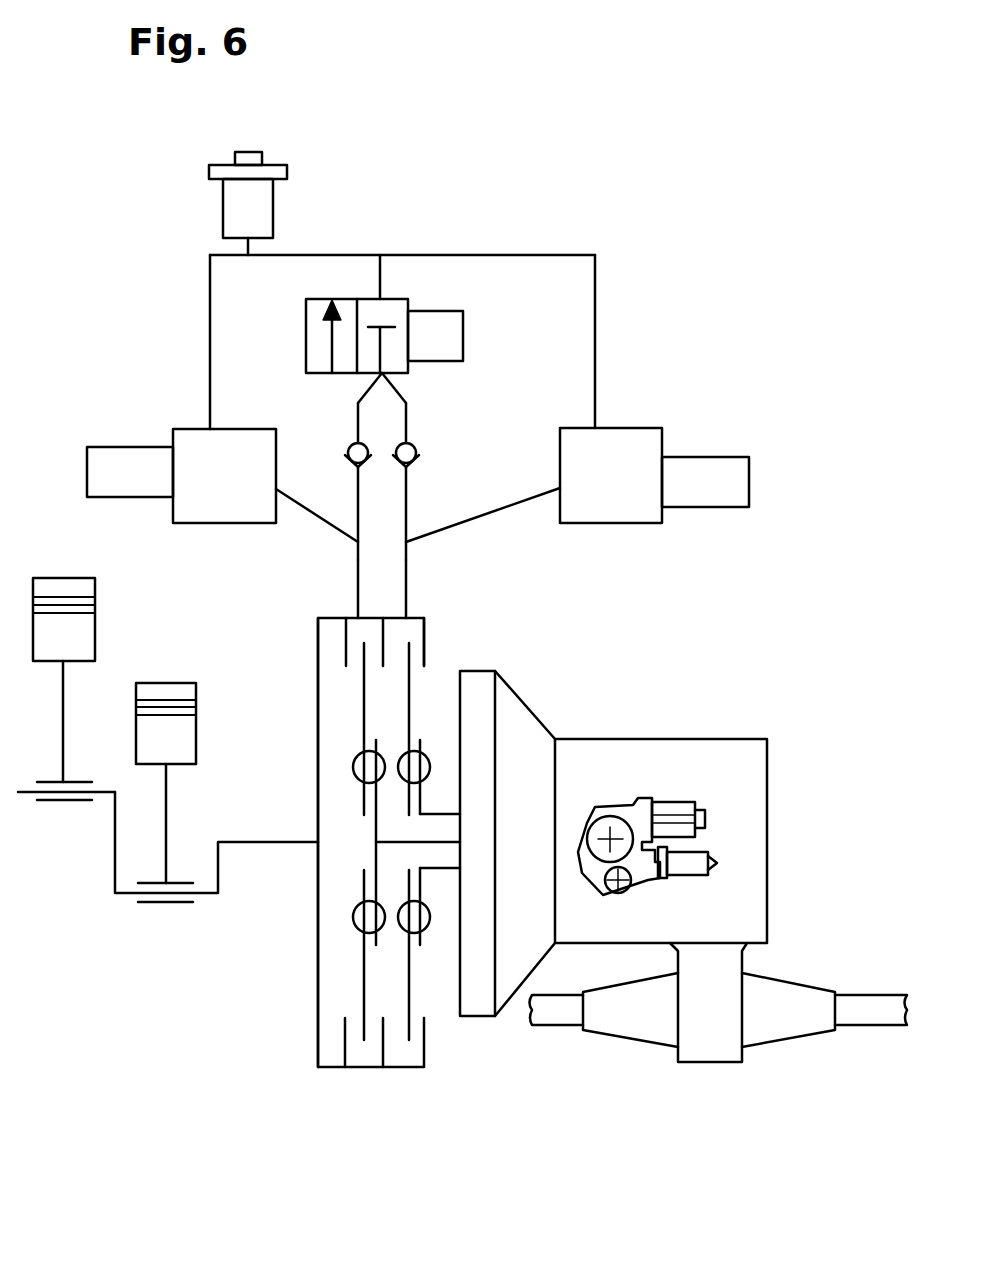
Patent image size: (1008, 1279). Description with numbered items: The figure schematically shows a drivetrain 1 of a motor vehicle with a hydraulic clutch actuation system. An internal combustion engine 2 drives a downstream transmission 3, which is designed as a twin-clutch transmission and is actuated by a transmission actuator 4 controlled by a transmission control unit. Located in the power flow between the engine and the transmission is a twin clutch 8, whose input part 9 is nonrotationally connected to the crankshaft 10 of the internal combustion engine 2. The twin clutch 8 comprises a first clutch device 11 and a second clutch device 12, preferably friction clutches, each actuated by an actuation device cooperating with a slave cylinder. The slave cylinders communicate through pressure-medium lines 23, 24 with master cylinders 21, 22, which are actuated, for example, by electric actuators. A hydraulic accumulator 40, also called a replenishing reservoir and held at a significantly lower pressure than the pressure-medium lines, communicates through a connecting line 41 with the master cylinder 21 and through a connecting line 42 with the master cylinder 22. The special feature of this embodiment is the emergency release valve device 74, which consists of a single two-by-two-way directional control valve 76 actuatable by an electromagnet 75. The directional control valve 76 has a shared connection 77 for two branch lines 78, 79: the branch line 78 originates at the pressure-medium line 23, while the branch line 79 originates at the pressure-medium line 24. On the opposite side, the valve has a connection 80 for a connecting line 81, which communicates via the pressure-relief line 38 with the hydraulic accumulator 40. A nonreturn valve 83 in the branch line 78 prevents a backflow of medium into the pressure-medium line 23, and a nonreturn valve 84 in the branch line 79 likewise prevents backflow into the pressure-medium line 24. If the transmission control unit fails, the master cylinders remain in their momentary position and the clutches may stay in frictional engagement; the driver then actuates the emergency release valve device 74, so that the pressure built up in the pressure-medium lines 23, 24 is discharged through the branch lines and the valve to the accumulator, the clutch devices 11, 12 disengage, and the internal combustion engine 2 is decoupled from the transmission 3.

The drivetrain 1 is at (268, 1029).
The internal combustion engine 2 is at (147, 917).
The transmission 3 is at (538, 707).
The transmission actuator 4 is at (670, 810).
The twin clutch 8 is at (364, 1071).
The input part 9 is at (308, 823).
The crankshaft 10 is at (286, 852).
The first clutch device 11 is at (337, 1071).
The second clutch device 12 is at (413, 1071).
The master cylinder 21 is at (225, 508).
The master cylinder 22 is at (611, 512).
The pressure-medium line 23 is at (356, 590).
The pressure-medium line 24 is at (408, 590).
The pressure-relief line 38 is at (306, 253).
The hydraulic accumulator 40 is at (225, 203).
The connecting line 41 is at (206, 315).
The connecting line 42 is at (596, 318).
The emergency release valve device 74 is at (389, 289).
The electromagnet 75 is at (464, 323).
The 2/2-way directional control valve 76 is at (398, 308).
The shared connection 77 is at (400, 379).
The branch line 78 is at (356, 493).
The branch line 79 is at (408, 493).
The connection 80 is at (373, 289).
The connecting line 81 is at (383, 271).
The nonreturn valve 83 is at (348, 448).
The nonreturn valve 84 is at (416, 448).